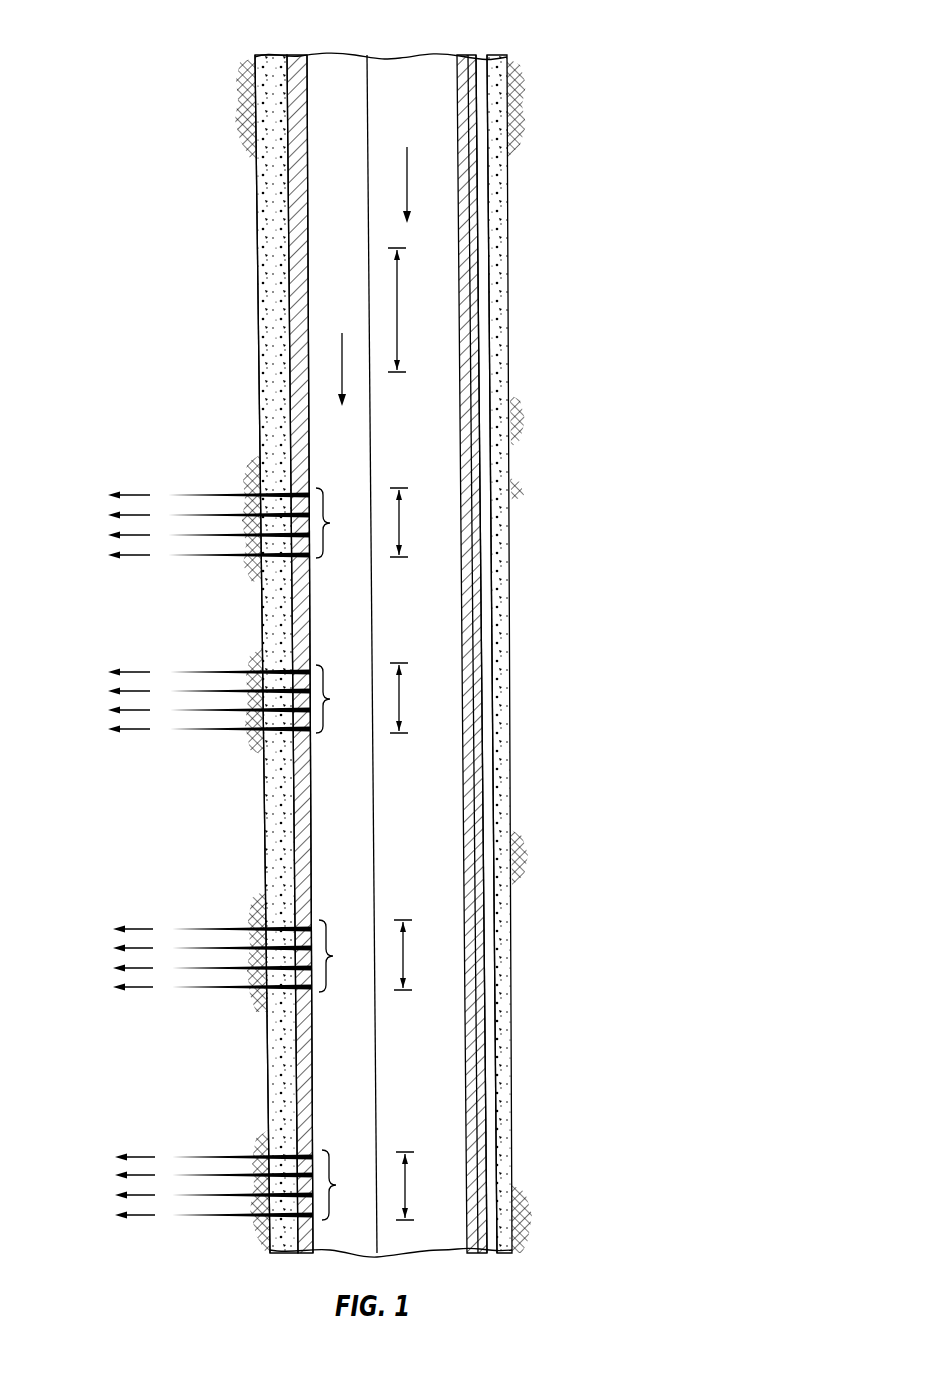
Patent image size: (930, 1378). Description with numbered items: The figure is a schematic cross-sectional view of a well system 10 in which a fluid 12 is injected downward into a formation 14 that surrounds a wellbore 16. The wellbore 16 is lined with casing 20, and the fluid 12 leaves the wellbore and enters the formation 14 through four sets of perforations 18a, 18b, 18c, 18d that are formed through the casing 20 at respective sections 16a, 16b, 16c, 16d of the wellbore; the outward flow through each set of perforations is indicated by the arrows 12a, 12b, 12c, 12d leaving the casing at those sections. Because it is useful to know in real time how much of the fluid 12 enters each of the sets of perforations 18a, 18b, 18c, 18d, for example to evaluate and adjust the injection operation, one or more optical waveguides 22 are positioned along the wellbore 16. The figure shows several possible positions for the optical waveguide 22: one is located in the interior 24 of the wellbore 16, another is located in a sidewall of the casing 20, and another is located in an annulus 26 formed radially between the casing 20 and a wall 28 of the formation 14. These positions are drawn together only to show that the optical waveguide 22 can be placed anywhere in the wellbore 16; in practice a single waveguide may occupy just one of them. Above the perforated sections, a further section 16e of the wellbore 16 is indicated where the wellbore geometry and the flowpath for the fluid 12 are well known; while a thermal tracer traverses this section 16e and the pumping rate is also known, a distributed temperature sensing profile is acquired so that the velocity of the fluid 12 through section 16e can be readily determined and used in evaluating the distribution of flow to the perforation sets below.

The well system 10 is at (630, 144).
The fluid 12 is at (405, 158).
The fluid flow through first perforation set 12a is at (133, 495).
The fluid flow through second perforation set 12b is at (137, 672).
The fluid flow through third perforation set 12c is at (135, 929).
The fluid flow through fourth perforation set 12d is at (142, 1157).
The formation 14 is at (54, 818).
The wellbore 16 is at (453, 739).
The section of the wellbore 16a is at (400, 520).
The section of the wellbore 16b is at (400, 697).
The section of the wellbore 16c is at (404, 953).
The section of the wellbore 16d is at (407, 1184).
The section of the wellbore 16e is at (399, 336).
The set of perforations 18a is at (266, 521).
The set of perforations 18b is at (269, 696).
The set of perforations 18c is at (272, 956).
The set of perforations 18d is at (270, 1174).
The casing 20 is at (485, 1038).
The optical waveguide 22 is at (366, 140).
The interior of the wellbore 24 is at (330, 218).
The annulus 26 is at (276, 845).
The wall of the formation 28 is at (264, 1050).